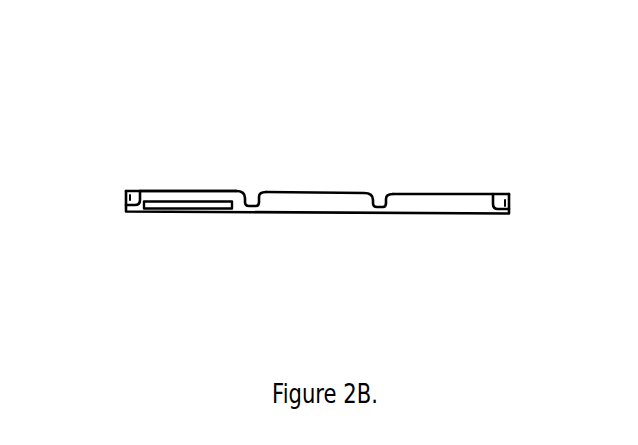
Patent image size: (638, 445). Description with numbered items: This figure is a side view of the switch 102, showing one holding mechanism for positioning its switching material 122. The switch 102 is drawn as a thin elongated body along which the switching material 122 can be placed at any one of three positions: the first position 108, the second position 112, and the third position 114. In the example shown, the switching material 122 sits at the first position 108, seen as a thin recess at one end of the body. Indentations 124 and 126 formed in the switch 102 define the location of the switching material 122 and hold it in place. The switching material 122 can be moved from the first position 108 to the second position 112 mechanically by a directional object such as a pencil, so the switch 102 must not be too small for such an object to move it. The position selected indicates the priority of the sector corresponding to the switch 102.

The switch 102 is at (303, 160).
The first position 108 is at (185, 191).
The second position 112 is at (315, 192).
The third position 114 is at (442, 193).
The switching material 122 is at (182, 208).
The indentation 124 is at (252, 207).
The indentation 126 is at (130, 192).